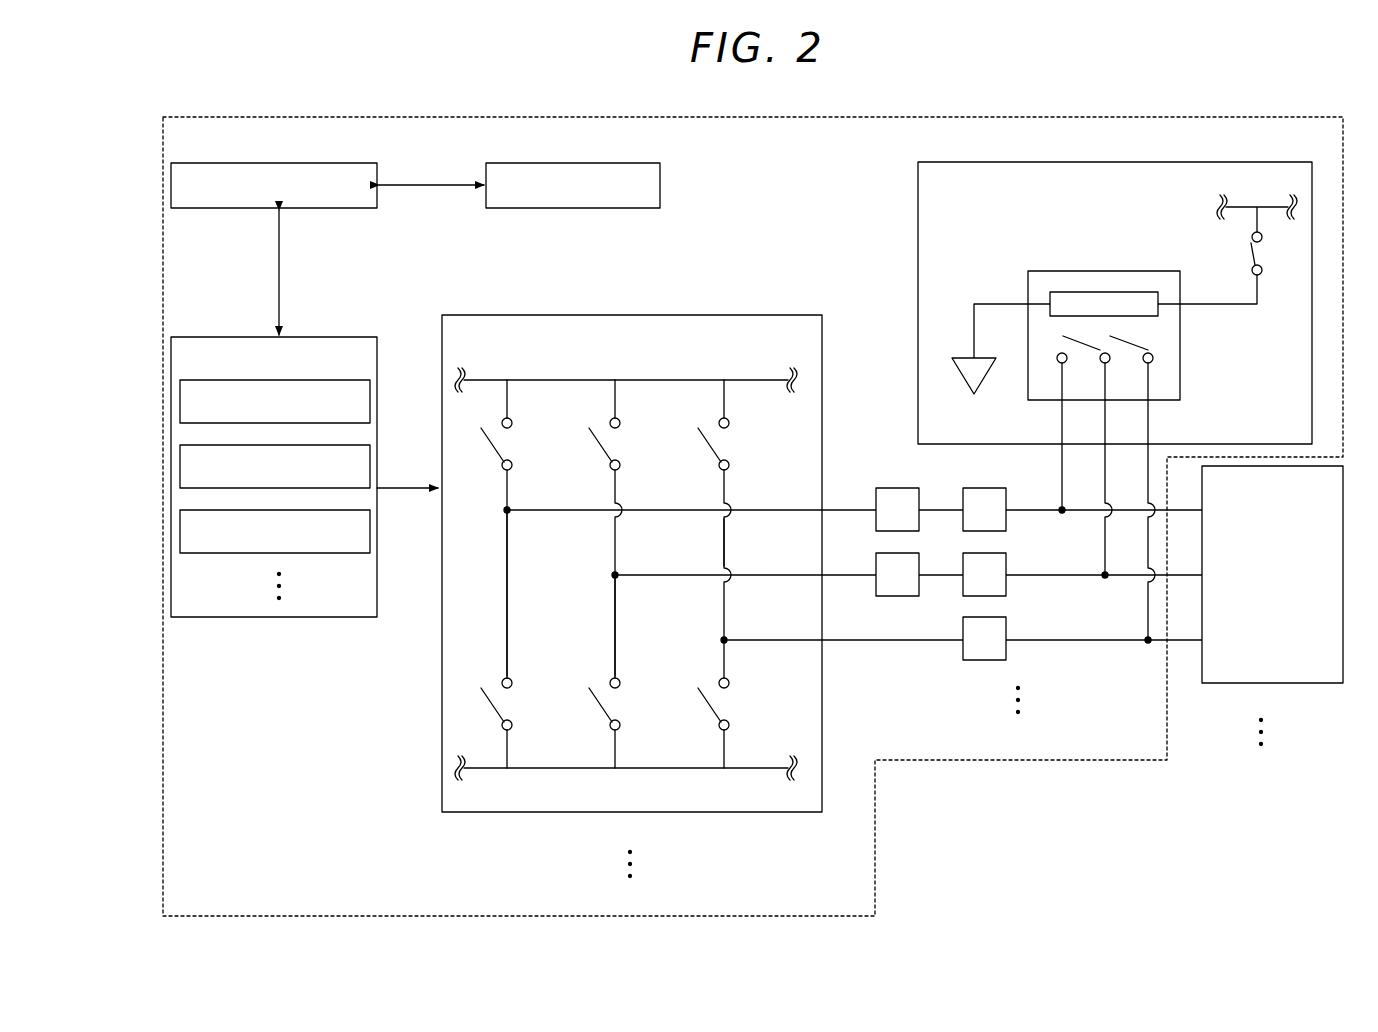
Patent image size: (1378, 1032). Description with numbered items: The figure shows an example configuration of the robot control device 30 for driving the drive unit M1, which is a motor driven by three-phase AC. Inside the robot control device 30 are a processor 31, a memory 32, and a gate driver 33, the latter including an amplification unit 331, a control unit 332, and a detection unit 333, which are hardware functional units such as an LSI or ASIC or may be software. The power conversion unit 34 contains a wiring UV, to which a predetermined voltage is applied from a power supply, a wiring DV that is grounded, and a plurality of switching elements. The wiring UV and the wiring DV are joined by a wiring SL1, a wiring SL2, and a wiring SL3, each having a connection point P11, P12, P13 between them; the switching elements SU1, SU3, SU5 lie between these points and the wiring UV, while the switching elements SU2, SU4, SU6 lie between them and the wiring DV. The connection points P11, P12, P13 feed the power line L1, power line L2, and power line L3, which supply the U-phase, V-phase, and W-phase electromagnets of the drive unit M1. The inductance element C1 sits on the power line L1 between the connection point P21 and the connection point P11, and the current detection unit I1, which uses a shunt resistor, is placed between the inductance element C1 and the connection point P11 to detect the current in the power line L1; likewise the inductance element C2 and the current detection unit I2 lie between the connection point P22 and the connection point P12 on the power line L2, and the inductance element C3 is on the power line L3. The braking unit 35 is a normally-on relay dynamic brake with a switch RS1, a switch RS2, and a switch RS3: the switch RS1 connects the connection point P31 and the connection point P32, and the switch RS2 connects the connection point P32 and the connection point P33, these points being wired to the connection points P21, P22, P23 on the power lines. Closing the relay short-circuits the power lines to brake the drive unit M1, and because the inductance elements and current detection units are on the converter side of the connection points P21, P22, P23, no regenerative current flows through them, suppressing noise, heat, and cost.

The robot control device 30 is at (1244, 117).
The processor 31 is at (336, 163).
The memory 32 is at (618, 163).
The gate driver 33 is at (305, 461).
The amplification unit 331 is at (372, 399).
The control unit 332 is at (372, 463).
The detection unit 333 is at (372, 528).
The power conversion unit 34 is at (735, 315).
The braking unit 35 is at (1241, 162).
The wiring UV is at (698, 380).
The wiring DV is at (596, 768).
The switching element SU1 is at (511, 448).
The switching element SU2 is at (511, 710).
The switching element SU3 is at (619, 448).
The switching element SU4 is at (619, 710).
The switching element SU5 is at (728, 448).
The switching element SU6 is at (728, 710).
The connection point P11 is at (509, 510).
The connection point P12 is at (617, 575).
The connection point P13 is at (727, 640).
The wiring SL1 is at (509, 582).
The wiring SL2 is at (617, 628).
The wiring SL3 is at (727, 548).
The power line L1 is at (1036, 509).
The power line L2 is at (1050, 576).
The power line L3 is at (1063, 642).
The current detection unit I1 is at (880, 488).
The current detection unit I2 is at (880, 553).
The inductance element C1 is at (968, 488).
The inductance element C2 is at (968, 553).
The inductance element C3 is at (968, 617).
The connection point P21 is at (1062, 512).
The connection point P22 is at (1104, 576).
The connection point P23 is at (1146, 642).
The connection point P31 is at (1060, 366).
The connection point P32 is at (1110, 365).
The connection point P33 is at (1154, 358).
The switch RS1 is at (1085, 330).
The switch RS2 is at (1142, 330).
The switch RS3 is at (1242, 260).
The drive unit M1 is at (1214, 684).